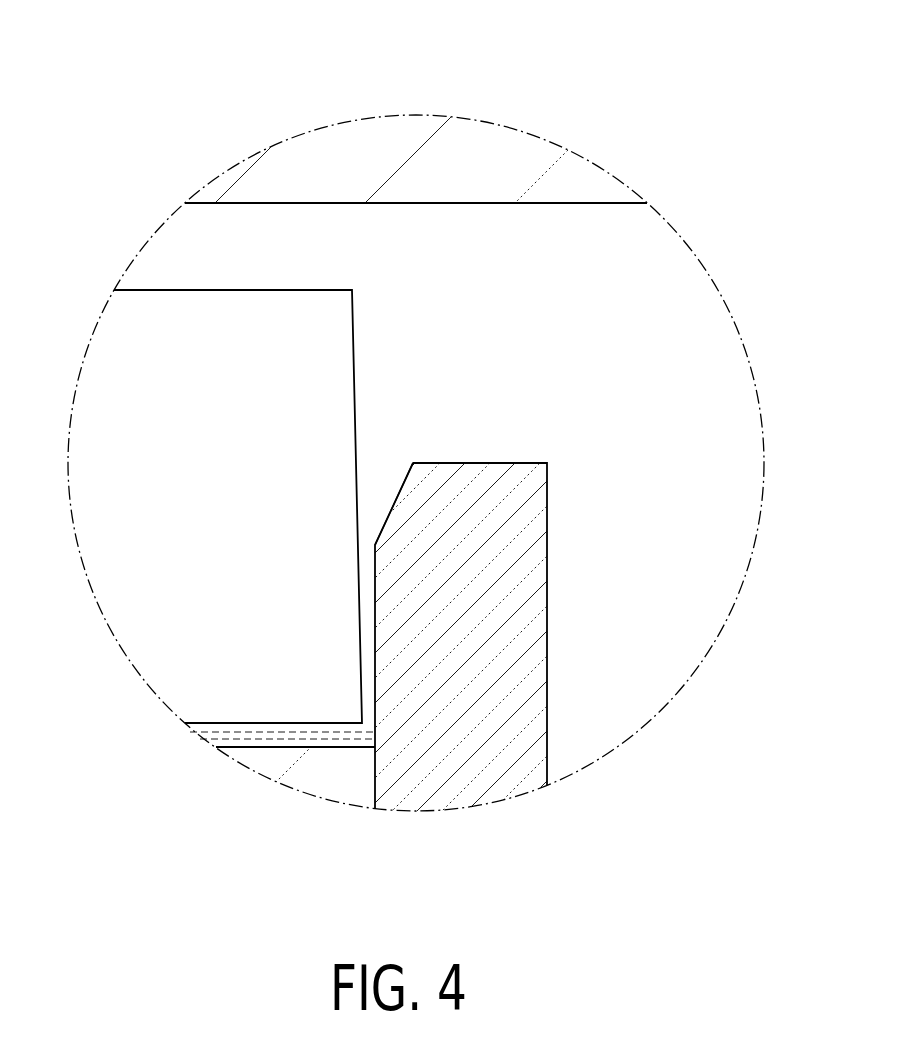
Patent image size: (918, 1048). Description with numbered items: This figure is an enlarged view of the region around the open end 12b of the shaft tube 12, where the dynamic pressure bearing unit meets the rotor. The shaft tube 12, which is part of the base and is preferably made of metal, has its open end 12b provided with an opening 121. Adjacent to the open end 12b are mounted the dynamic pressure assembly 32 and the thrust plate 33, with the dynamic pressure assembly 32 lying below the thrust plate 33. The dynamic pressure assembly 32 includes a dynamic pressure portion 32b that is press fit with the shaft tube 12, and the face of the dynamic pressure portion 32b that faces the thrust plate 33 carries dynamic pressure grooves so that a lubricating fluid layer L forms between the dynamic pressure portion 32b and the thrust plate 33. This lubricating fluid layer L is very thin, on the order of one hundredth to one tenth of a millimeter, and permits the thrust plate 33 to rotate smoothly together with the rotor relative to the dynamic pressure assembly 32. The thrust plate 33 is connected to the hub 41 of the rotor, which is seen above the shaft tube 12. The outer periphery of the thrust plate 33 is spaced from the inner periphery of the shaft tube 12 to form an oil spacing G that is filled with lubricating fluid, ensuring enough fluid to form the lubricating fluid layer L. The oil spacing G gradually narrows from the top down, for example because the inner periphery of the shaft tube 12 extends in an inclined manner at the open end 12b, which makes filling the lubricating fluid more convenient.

The hub 41 is at (470, 143).
The thrust plate 33 is at (173, 585).
The shaft tube 12 is at (527, 623).
The open end 12b is at (482, 462).
The opening 121 is at (387, 422).
The oil spacing G is at (368, 603).
The lubricating fluid layer L is at (245, 733).
The dynamic pressure portion 32b is at (315, 770).
The dynamic pressure assembly 32 is at (270, 820).